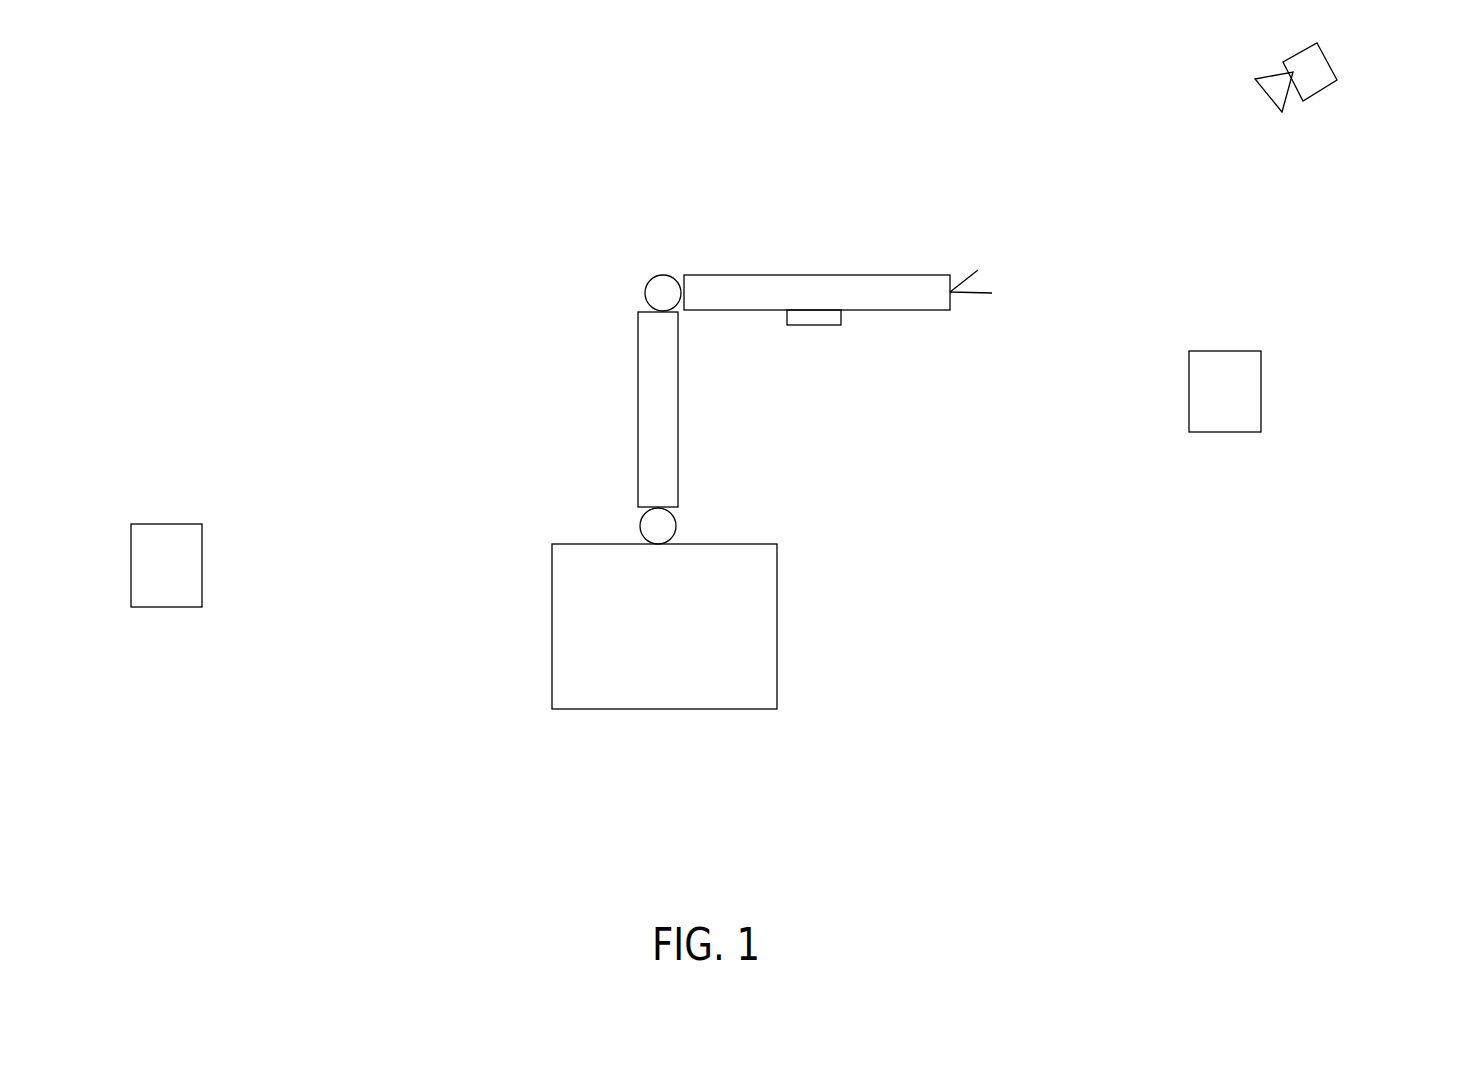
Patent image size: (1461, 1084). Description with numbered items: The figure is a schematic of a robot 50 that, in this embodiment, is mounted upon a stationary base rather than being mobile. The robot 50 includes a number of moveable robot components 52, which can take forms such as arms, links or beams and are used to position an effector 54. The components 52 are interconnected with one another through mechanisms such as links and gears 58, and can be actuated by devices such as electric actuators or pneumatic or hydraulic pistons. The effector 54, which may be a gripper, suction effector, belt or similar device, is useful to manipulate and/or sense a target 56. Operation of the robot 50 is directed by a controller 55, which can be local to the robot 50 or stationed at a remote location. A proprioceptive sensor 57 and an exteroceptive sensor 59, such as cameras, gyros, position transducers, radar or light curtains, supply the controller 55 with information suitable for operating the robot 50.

The robot 50 is at (300, 177).
The moveable robot components 52 is at (845, 273).
The effector 54 is at (957, 225).
The controller 55 is at (165, 523).
The target 56 is at (1217, 433).
The proprioceptive sensor 57 is at (810, 323).
The links and gears 58 is at (647, 280).
The exteroceptive sensor 59 is at (1327, 89).